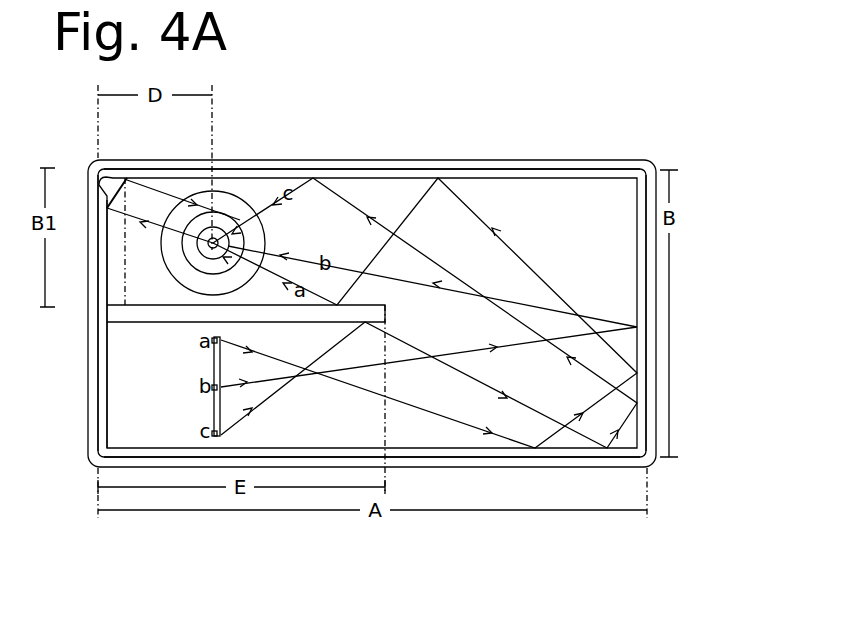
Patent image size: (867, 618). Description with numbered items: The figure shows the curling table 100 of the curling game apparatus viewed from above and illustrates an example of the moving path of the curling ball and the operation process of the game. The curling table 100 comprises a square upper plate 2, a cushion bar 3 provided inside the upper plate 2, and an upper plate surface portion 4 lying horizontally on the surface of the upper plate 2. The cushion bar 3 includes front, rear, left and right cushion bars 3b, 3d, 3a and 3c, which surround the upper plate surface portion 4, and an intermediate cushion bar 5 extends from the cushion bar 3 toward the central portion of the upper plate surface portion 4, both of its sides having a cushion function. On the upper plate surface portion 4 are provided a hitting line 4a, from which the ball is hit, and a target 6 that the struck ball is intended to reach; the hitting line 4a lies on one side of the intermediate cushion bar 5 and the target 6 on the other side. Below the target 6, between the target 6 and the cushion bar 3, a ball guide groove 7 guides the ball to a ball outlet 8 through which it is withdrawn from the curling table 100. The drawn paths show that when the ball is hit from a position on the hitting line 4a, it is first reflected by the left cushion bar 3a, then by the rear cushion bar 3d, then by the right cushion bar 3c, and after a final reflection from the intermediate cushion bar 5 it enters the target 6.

The upper plate 2 is at (573, 161).
The cushion bar 3 is at (464, 170).
The left cushion bar 3a is at (460, 452).
The front cushion bar 3b is at (100, 220).
The right cushion bar 3c is at (316, 176).
The rear cushion bar 3d is at (645, 289).
The upper plate surface portion 4 is at (620, 250).
The hitting line 4a is at (223, 411).
The intermediate cushion bar 5 is at (384, 314).
The target 6 is at (214, 240).
The ball guide groove 7 is at (112, 250).
The ball outlet 8 is at (110, 174).
The curling table 100 is at (402, 332).